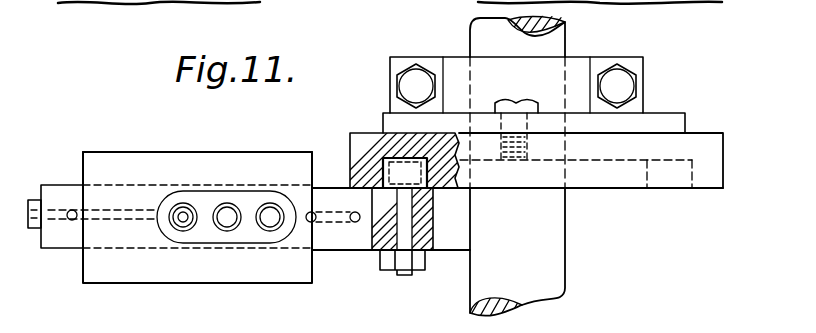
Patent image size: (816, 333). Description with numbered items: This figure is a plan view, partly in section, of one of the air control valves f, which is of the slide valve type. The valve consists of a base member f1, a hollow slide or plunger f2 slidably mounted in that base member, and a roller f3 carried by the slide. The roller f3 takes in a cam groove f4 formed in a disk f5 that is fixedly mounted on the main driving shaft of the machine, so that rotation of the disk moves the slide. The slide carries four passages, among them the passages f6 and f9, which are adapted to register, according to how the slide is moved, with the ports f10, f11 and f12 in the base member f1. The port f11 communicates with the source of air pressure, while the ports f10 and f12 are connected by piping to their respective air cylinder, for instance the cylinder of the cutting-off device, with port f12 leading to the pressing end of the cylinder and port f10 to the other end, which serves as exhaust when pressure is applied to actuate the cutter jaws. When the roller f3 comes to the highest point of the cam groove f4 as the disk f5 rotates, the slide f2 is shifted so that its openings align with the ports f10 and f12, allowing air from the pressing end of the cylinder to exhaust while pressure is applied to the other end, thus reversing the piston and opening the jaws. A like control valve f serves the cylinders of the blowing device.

The air control valve f is at (197, 131).
The base member f1 is at (193, 266).
The hollow slide or plunger f2 is at (365, 243).
The roller f3 is at (383, 159).
The cam groove f4 is at (663, 168).
The disk f5 is at (592, 182).
The passage f6 is at (114, 212).
The passage f9 is at (332, 222).
The port f10 is at (175, 213).
The port f11 is at (219, 208).
The port f12 is at (268, 204).